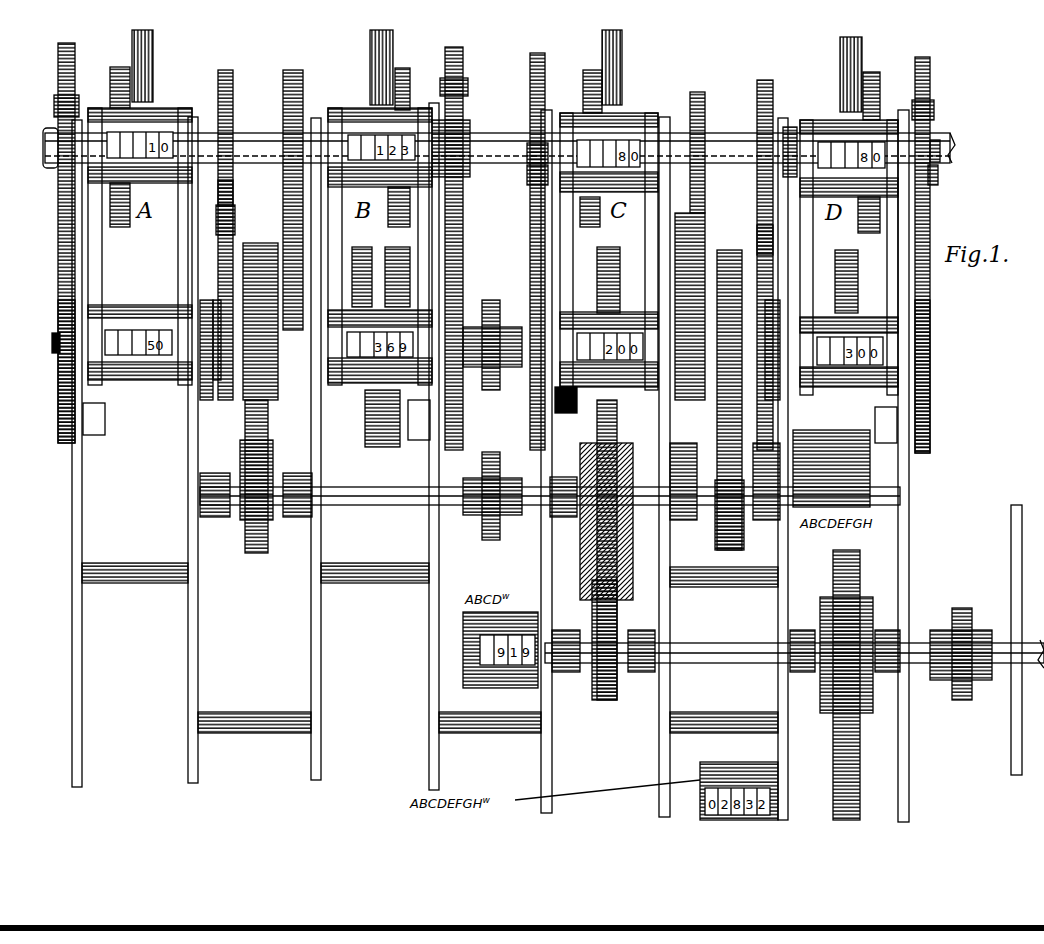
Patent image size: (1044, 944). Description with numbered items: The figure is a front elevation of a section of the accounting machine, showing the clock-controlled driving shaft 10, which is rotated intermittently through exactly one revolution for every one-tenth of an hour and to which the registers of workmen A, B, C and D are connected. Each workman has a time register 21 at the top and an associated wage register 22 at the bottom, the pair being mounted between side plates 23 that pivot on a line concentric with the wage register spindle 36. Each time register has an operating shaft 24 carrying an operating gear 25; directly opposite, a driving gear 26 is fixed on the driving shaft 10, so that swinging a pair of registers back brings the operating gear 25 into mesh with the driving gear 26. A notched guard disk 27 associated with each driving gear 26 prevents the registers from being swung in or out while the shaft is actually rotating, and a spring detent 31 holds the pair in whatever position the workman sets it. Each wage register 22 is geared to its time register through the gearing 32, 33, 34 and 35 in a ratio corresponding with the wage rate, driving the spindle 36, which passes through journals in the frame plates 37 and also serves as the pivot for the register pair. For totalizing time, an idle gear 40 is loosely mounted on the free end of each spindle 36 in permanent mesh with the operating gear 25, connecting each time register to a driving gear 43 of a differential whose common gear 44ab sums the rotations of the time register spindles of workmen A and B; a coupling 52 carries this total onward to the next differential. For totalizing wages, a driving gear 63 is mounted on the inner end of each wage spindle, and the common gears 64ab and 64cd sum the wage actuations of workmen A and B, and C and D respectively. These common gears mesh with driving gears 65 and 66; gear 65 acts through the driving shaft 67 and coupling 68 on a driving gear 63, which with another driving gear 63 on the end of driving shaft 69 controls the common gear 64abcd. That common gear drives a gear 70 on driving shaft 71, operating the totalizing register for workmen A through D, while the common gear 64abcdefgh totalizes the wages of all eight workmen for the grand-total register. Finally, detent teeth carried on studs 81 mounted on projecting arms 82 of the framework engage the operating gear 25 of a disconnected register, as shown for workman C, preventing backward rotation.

The driving shaft 10 is at (50, 165).
The time register 21 is at (165, 108).
The wage register 22 is at (125, 308).
The side plates 23 is at (178, 230).
The operating shaft 24 is at (240, 136).
The operating gear 25 is at (75, 60).
The driving gear 26 is at (54, 100).
The guard disk 27 is at (405, 70).
The spring detent 31 is at (105, 400).
The gearing 32 is at (233, 98).
The gearing 33 is at (233, 220).
The gearing 34 is at (233, 192).
The gearing 35 is at (205, 380).
The driving spindle 36 is at (52, 345).
The frame plates 37 is at (82, 480).
The idle gear 40 is at (58, 398).
The driving gear of differential 43 is at (358, 290).
The common gear 44ab is at (375, 447).
The coupling 52 is at (484, 392).
The driving gear 63 is at (248, 258).
The common gear 64ab is at (265, 420).
The common gear 64cd is at (717, 420).
The common gear 64abcd is at (620, 588).
The common gear 64abcdefgh is at (860, 580).
The driving gear 65 is at (250, 553).
The driving gear 66 is at (742, 540).
The driving shaft 67 is at (378, 505).
The coupling 68 is at (490, 540).
The driving shaft 69 is at (690, 520).
The driving gear 70 is at (605, 700).
The driving shaft 71 is at (575, 672).
The studs 81 is at (530, 165).
The projecting arms 82 is at (535, 186).